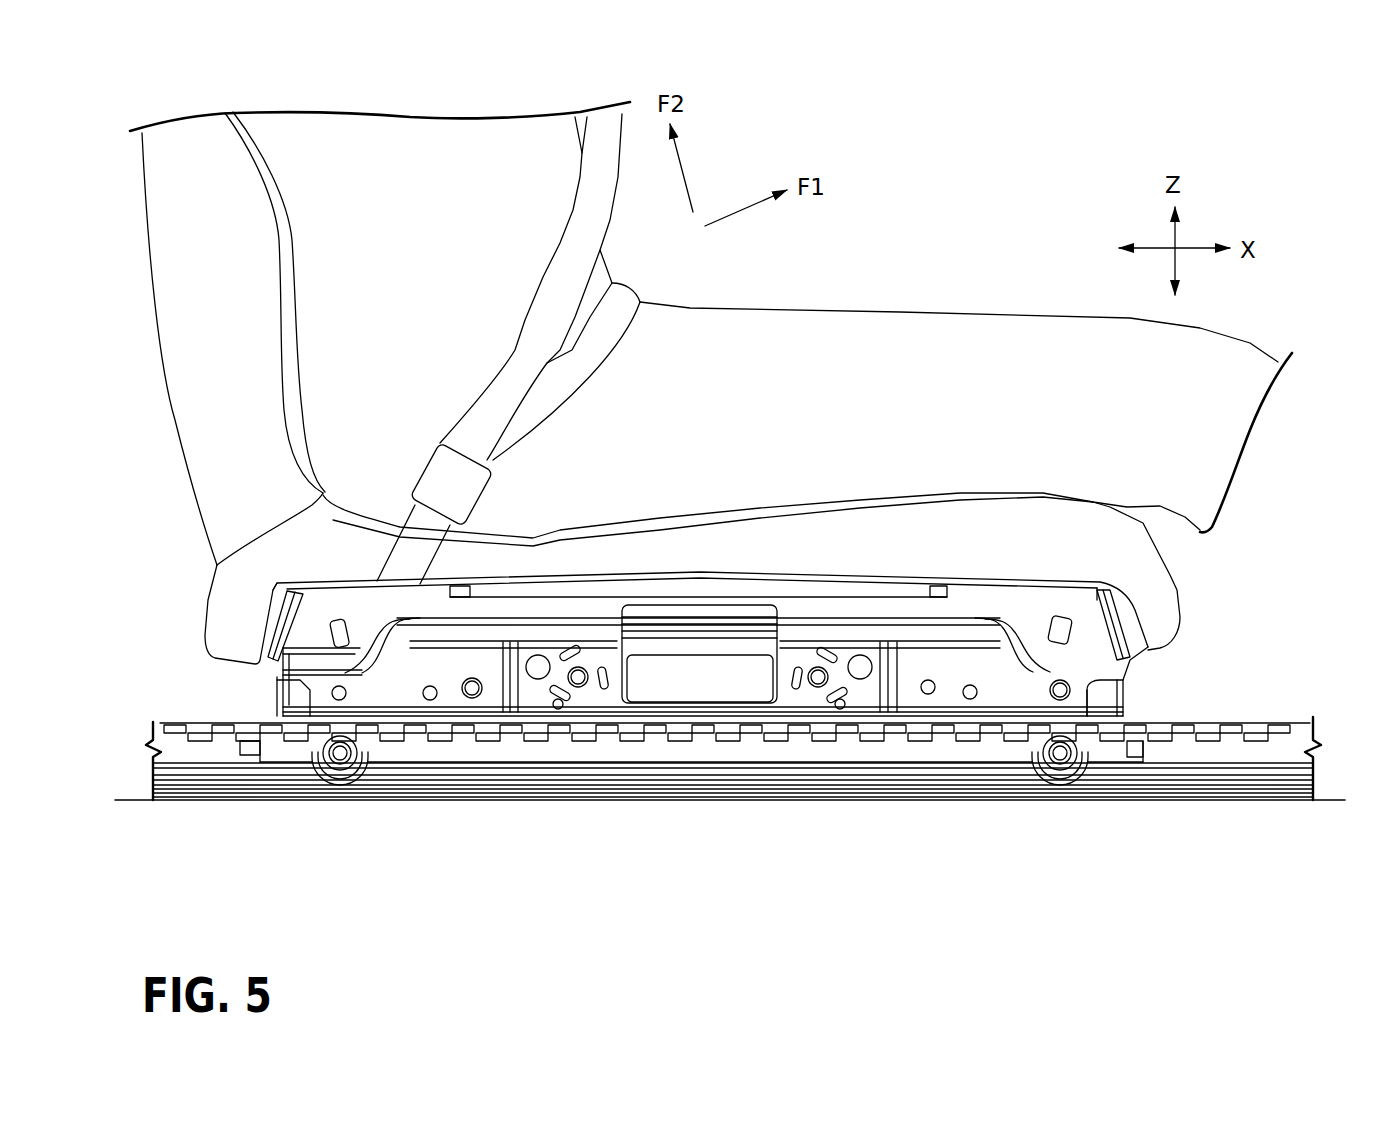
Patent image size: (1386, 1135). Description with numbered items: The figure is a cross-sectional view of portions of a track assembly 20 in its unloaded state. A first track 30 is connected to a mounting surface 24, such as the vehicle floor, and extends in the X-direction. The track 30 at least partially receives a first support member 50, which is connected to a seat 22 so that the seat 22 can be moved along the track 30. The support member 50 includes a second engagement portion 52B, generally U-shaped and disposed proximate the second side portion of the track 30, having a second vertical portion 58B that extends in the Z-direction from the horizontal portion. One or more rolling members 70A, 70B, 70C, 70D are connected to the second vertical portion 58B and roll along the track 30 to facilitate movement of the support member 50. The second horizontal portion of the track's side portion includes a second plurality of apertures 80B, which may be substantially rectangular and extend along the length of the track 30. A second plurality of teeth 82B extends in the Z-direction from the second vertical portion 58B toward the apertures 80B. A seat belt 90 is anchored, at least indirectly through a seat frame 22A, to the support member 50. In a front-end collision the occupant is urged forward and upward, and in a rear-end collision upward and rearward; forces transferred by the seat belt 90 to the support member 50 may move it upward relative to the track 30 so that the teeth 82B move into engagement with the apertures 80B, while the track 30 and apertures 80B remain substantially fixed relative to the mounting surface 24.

The track assembly 20 is at (196, 622).
The seat 22 is at (150, 304).
The seat frame 22A is at (205, 406).
The mounting surface 24 is at (1328, 797).
The first track 30 is at (1230, 760).
The first support member 50 is at (593, 560).
The second engagement portion 52B is at (1097, 683).
The second vertical portion 58B is at (945, 747).
The first rolling member 70A is at (289, 810).
The second rolling member 70B is at (322, 773).
The third rolling member 70C is at (1108, 810).
The fourth rolling member 70D is at (1077, 767).
The second plurality of apertures 80B is at (462, 733).
The second plurality of teeth 82B is at (652, 735).
The seat belt 90 is at (627, 300).